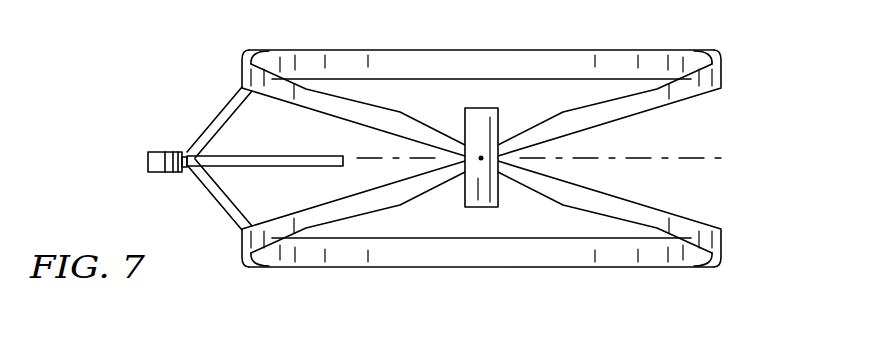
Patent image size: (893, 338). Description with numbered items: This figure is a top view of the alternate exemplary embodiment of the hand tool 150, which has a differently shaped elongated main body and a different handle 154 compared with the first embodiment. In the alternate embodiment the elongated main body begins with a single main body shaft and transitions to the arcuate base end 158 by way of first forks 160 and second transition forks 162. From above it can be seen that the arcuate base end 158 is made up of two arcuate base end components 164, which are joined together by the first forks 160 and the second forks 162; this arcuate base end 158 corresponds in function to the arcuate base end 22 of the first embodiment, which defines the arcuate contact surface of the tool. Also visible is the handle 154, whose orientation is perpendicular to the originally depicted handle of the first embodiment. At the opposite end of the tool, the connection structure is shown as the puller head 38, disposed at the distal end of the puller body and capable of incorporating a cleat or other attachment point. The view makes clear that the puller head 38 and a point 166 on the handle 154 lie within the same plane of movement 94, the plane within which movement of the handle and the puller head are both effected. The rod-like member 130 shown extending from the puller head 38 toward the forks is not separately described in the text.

The hand tool 150 is at (172, 89).
The puller head 38 is at (158, 150).
The support rod 130 is at (246, 155).
The plane of movement 94 is at (710, 157).
The arcuate base end 22 is at (382, 50).
The arcuate base end 158 is at (577, 47).
The arcuate base end components 164 is at (578, 268).
The second transition forks 162 is at (375, 118).
The first forks 160 is at (607, 110).
The handle 154 is at (493, 108).
The point on the handle 166 is at (481, 157).